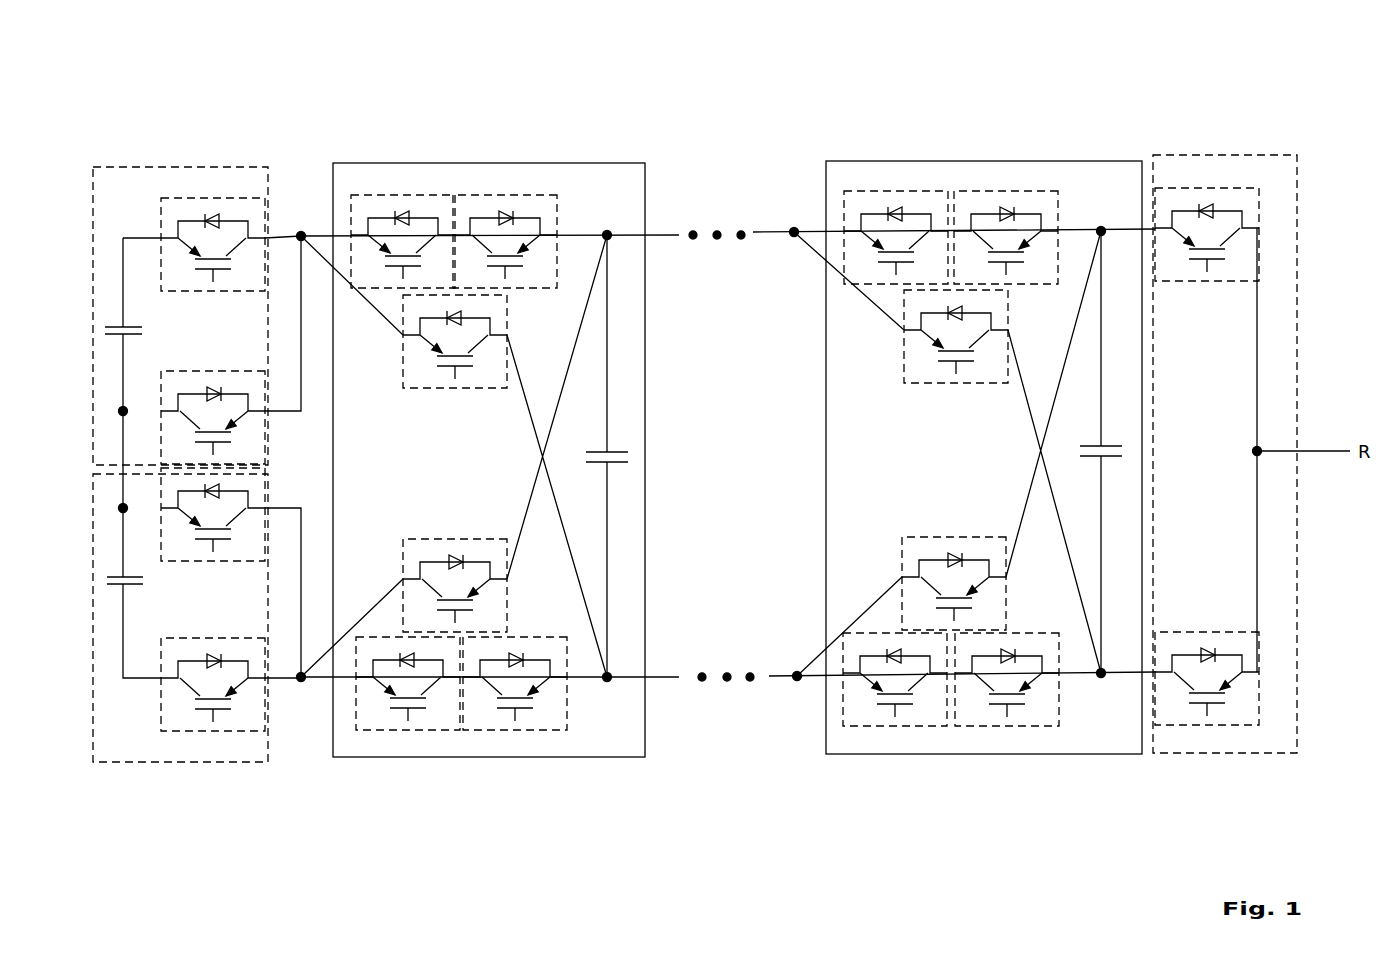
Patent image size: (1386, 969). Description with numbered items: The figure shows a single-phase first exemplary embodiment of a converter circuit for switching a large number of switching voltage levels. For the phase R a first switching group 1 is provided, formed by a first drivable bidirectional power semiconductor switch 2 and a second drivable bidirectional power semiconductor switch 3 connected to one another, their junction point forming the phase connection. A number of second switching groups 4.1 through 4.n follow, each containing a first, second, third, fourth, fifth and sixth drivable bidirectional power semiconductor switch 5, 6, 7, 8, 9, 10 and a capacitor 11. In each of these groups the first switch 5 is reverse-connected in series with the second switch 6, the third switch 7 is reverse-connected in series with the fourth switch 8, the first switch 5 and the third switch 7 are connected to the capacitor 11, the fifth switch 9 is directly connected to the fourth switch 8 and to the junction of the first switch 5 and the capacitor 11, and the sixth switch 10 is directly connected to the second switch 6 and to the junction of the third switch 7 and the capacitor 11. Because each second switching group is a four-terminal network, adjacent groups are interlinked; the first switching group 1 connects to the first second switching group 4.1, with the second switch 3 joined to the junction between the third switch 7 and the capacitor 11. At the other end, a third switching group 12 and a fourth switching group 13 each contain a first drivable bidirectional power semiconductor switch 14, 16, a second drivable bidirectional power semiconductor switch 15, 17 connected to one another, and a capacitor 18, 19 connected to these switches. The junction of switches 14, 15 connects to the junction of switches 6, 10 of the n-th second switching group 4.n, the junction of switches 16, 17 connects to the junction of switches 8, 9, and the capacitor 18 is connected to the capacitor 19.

The first switching group 1 is at (1193, 155).
The first drivable bidirectional power semiconductor switch 2 is at (1228, 188).
The second drivable bidirectional power semiconductor switch 3 is at (1207, 725).
The first second switching group 4.1 is at (947, 161).
The n-th second switching group 4.n is at (473, 163).
The first drivable bidirectional power semiconductor switch 5 is at (532, 196).
The second drivable bidirectional power semiconductor switch 6 is at (372, 196).
The third drivable bidirectional power semiconductor switch 7 is at (530, 731).
The fourth drivable bidirectional power semiconductor switch 8 is at (382, 731).
The fifth drivable bidirectional power semiconductor switch 9 is at (435, 633).
The sixth drivable bidirectional power semiconductor switch 10 is at (505, 325).
The capacitor 11 is at (622, 455).
The third switching group 12 is at (123, 167).
The fourth switching group 13 is at (107, 764).
The first drivable bidirectional power semiconductor switch 14 is at (220, 198).
The second drivable bidirectional power semiconductor switch 15 is at (247, 371).
The first drivable bidirectional power semiconductor switch 16 is at (210, 731).
The second drivable bidirectional power semiconductor switch 17 is at (227, 561).
The capacitor 18 is at (142, 326).
The capacitor 19 is at (143, 585).